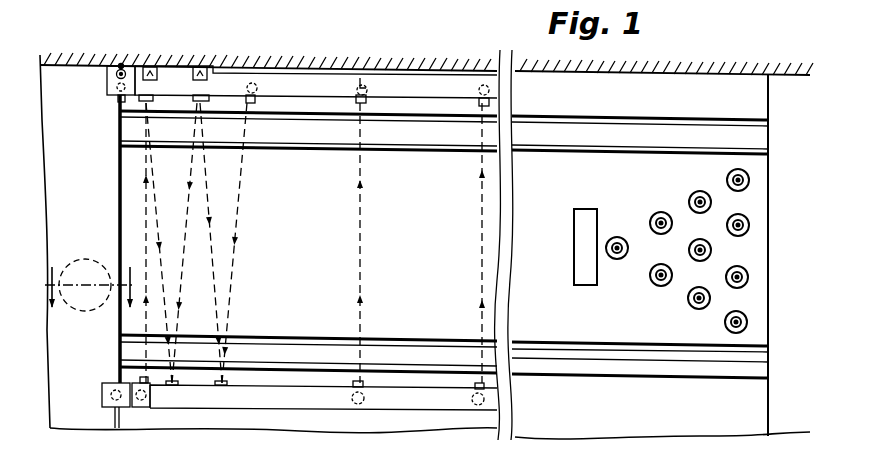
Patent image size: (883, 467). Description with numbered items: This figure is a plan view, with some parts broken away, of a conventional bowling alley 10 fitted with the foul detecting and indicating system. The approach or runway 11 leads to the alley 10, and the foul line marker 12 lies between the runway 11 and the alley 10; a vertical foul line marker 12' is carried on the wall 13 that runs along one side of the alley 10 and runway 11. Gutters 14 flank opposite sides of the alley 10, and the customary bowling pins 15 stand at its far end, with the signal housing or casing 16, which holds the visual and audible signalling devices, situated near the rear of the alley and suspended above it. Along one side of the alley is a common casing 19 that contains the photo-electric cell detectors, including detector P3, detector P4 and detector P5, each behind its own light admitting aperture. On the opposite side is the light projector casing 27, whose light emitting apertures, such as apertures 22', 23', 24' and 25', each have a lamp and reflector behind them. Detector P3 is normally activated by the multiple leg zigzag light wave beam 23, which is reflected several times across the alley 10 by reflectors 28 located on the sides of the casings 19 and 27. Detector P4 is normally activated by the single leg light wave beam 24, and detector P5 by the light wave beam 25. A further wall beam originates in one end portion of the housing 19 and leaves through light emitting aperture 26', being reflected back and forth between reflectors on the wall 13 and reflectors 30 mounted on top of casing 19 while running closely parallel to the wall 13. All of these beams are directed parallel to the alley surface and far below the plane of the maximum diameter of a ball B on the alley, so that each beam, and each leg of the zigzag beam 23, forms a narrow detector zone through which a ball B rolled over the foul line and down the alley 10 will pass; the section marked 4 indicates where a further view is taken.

The bowling alley 10 is at (522, 255).
The approach or runway 11 is at (64, 241).
The foul line marker 12 is at (99, 239).
The vertical foul line marker 12' is at (129, 42).
The wall 13 is at (75, 64).
The gutters 14 is at (568, 350).
The bowling pins 15 is at (701, 201).
The signal housing or casing 16 is at (585, 253).
The casing 19 is at (316, 82).
The light emitting aperture 22' is at (105, 381).
The multiple leg zigzag light wave beam 23 is at (212, 243).
The light emitting aperture 23' is at (159, 416).
The single leg light wave beam 24 is at (375, 243).
The light emitting aperture 24' is at (359, 419).
The light wave beam 25 is at (462, 243).
The light emitting aperture 25' is at (465, 423).
The light emitting aperture 26' is at (100, 84).
The light projector casing 27 is at (323, 397).
The reflectors 28 is at (196, 99).
The reflectors 30 is at (200, 66).
The section line 4- 4 is at (90, 275).
The ball B is at (98, 258).
The photo-electric cell detector P3 is at (254, 81).
The photo-electric cell detector P4 is at (366, 62).
The photo-electric cell detector P5 is at (491, 63).